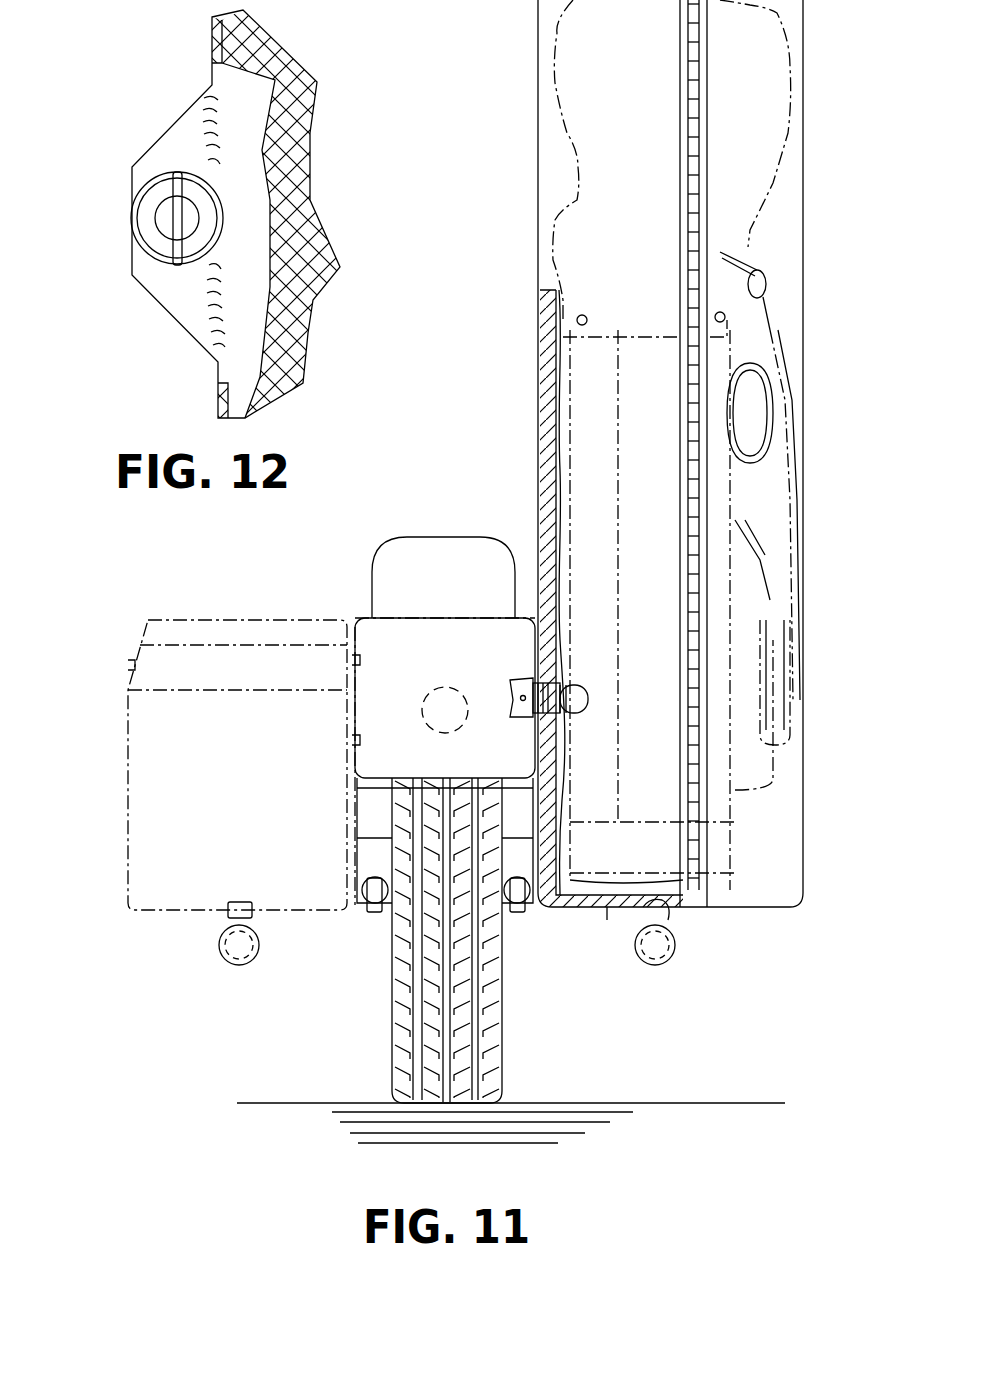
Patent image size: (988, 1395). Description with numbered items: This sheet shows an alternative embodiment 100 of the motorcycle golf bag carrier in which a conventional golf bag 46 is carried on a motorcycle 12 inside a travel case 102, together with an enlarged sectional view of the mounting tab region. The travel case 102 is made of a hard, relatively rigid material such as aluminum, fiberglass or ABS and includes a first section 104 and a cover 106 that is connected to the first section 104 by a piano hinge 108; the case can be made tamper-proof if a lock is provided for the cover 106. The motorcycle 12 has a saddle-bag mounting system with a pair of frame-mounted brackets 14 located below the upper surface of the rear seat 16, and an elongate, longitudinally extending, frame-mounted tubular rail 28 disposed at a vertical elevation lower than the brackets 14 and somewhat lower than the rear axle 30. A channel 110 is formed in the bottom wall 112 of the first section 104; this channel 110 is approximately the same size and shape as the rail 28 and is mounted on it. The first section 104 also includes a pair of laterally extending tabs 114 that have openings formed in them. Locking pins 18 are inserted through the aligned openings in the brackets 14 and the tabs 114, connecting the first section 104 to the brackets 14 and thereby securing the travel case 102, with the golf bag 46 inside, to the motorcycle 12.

In FIG. 11, the motorcycle 12 is at (335, 563).
In FIG. 11, the frame-mounted bracket 14 is at (525, 677).
In FIG. 11, the rear seat 16 is at (415, 557).
In FIG. 12, the locking pin 18 is at (172, 260).
In FIG. 11, the locking pin 18 is at (588, 697).
In FIG. 11, the tubular rail 28 is at (670, 923).
In FIG. 11, the rear axle 30 is at (390, 910).
In FIG. 11, the golf bag 46 is at (743, 357).
In FIG. 11, the alternative embodiment 100 is at (825, 237).
In FIG. 11, the travel case 102 is at (838, 130).
In FIG. 12, the first section 104 is at (283, 63).
In FIG. 11, the first section 104 is at (548, 392).
In FIG. 11, the cover 106 is at (790, 435).
In FIG. 11, the piano hinge 108 is at (693, 67).
In FIG. 11, the channel 110 is at (632, 947).
In FIG. 11, the bottom wall 112 is at (607, 905).
In FIG. 12, the tab 114 is at (183, 300).